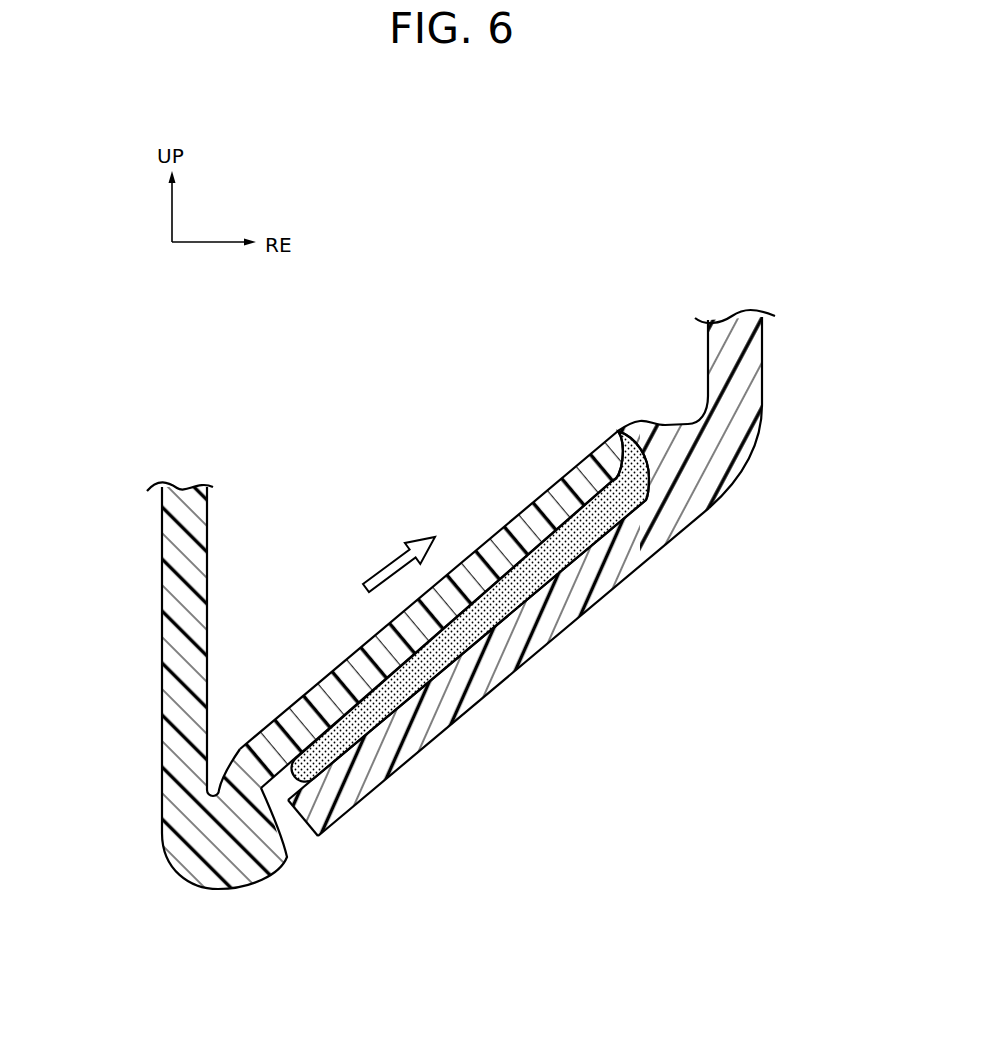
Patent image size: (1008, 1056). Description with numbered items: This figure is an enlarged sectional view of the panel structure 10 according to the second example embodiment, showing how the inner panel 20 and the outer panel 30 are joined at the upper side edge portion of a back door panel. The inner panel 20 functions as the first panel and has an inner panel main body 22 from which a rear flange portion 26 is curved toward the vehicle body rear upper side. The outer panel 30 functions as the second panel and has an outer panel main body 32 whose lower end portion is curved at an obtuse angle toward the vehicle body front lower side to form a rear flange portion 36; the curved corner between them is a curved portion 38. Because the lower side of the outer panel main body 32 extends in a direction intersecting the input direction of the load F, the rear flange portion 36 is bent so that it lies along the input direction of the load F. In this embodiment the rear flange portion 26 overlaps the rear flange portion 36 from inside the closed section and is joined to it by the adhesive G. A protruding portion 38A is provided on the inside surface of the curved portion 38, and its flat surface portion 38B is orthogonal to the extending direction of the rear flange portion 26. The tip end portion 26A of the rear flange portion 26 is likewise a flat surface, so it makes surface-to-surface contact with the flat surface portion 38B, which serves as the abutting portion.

The panel structure 10 is at (326, 462).
The inner panel 20 is at (156, 604).
The inner panel main body 22 is at (150, 497).
The rear flange portion 26 is at (431, 570).
The tip end portion 26A is at (618, 430).
The outer panel 30 is at (765, 394).
The outer panel main body 32 is at (766, 333).
The rear flange portion 36 is at (537, 655).
The curved portion 38 is at (622, 470).
The protruding portion 38A is at (633, 430).
The flat surface portion 38B is at (612, 482).
The adhesive G is at (386, 706).
The load F is at (396, 558).